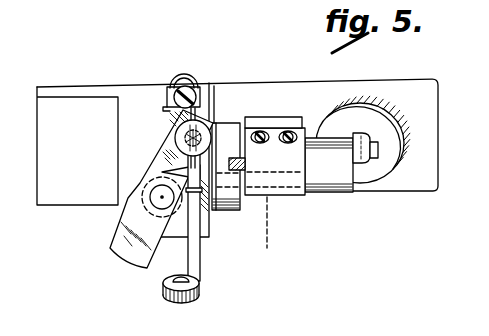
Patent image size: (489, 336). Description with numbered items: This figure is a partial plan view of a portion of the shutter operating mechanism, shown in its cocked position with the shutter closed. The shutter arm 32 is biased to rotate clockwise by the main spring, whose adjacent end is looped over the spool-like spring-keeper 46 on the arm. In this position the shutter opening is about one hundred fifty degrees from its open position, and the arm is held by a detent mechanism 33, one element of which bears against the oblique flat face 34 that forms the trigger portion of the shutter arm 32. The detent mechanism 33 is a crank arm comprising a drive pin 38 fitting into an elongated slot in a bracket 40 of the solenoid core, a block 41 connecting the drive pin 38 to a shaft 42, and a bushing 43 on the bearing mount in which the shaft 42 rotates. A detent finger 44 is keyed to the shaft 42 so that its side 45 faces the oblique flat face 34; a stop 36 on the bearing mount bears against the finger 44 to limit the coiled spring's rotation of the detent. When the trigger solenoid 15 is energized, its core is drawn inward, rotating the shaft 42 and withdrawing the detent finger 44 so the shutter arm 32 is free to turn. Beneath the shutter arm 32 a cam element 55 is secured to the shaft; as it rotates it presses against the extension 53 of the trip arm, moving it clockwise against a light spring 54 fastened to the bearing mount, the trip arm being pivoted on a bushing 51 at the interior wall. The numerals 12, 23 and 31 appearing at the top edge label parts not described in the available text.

The tape deck (partial, from figure above) 12 is at (55, 4).
The element (partial, from figure above) 23 is at (88, 1).
The element (partial, from figure above) 31 is at (143, 1).
The trigger solenoid 15 is at (373, 96).
The shutter arm 32 is at (153, 163).
The detent mechanism 33 is at (288, 198).
The oblique flat face 34 is at (236, 137).
The stop 36 is at (240, 152).
The drive pin 38 is at (391, 172).
The bracket 40 is at (365, 165).
The block 41 is at (345, 195).
The shaft 42 is at (268, 249).
The bushing 43 is at (298, 194).
The detent finger 44 is at (228, 122).
The side of detent finger 45 is at (212, 122).
The spring-keeper 46 is at (177, 134).
The pivotally mounted bushing 51 is at (200, 287).
The extension 53 is at (196, 257).
The light spring 54 is at (192, 73).
The cam element 55 is at (126, 196).